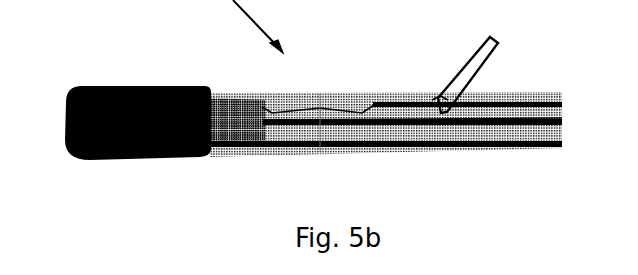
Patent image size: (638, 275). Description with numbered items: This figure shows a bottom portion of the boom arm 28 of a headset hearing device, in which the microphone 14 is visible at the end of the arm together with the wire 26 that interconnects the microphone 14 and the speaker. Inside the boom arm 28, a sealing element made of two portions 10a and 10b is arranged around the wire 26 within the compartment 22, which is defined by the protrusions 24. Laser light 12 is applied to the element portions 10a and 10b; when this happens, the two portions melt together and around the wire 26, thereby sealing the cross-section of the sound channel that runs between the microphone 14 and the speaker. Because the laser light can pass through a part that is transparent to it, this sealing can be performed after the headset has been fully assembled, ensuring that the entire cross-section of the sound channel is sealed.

The element portion 10a is at (437, 130).
The element portion 10b is at (437, 97).
The laser light 12 is at (499, 44).
The microphone 14 is at (116, 100).
The compartment 22 is at (462, 126).
The protrusions 24 is at (488, 101).
The wire 26 is at (297, 120).
The boom arm 28 is at (401, 92).